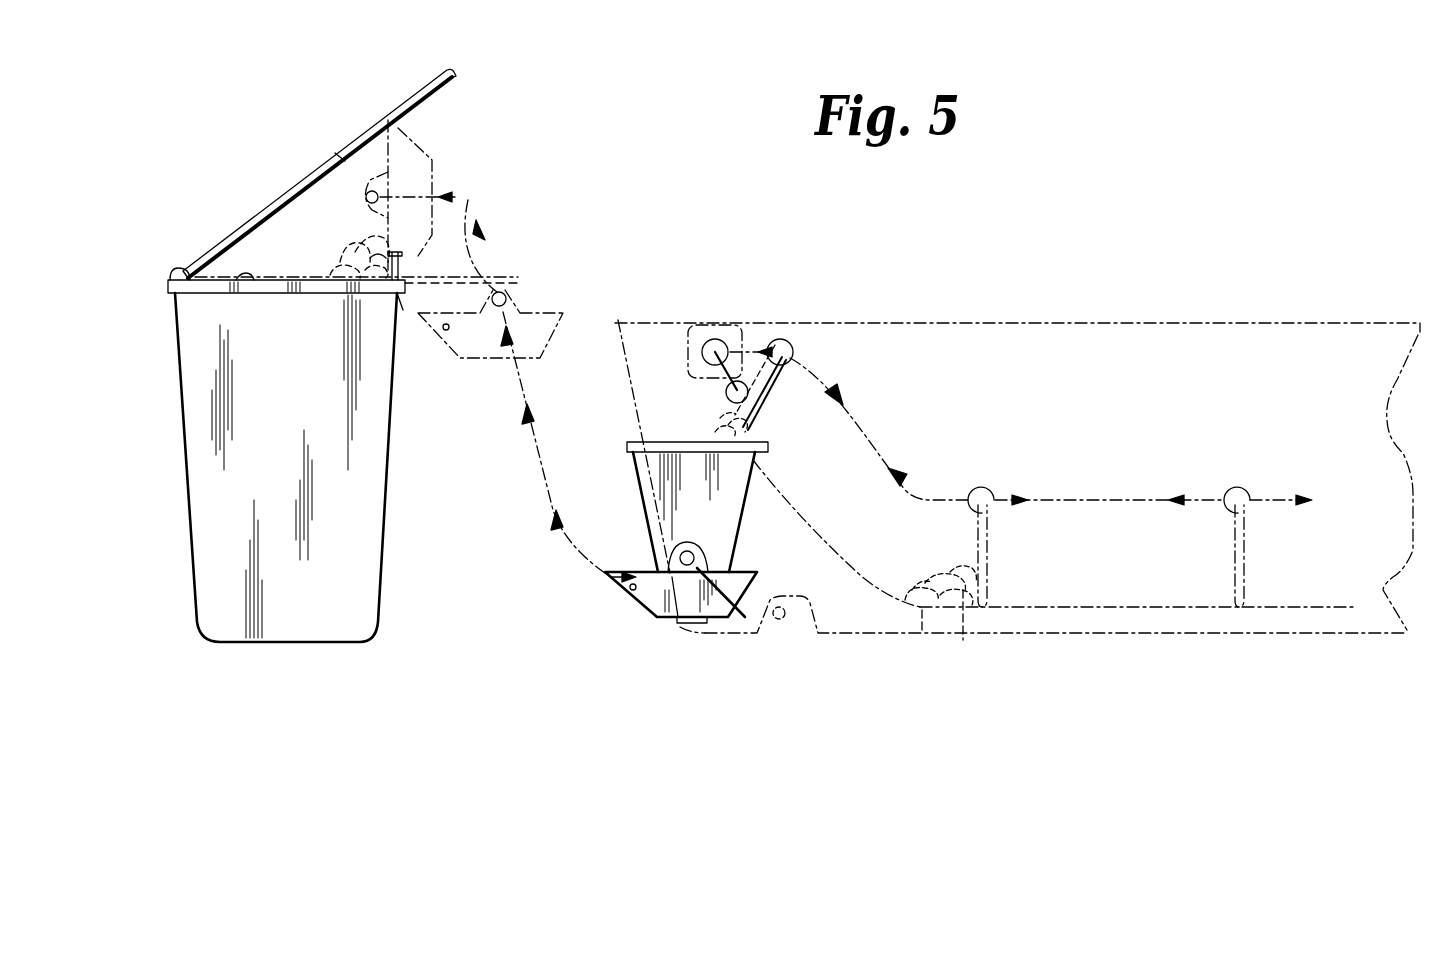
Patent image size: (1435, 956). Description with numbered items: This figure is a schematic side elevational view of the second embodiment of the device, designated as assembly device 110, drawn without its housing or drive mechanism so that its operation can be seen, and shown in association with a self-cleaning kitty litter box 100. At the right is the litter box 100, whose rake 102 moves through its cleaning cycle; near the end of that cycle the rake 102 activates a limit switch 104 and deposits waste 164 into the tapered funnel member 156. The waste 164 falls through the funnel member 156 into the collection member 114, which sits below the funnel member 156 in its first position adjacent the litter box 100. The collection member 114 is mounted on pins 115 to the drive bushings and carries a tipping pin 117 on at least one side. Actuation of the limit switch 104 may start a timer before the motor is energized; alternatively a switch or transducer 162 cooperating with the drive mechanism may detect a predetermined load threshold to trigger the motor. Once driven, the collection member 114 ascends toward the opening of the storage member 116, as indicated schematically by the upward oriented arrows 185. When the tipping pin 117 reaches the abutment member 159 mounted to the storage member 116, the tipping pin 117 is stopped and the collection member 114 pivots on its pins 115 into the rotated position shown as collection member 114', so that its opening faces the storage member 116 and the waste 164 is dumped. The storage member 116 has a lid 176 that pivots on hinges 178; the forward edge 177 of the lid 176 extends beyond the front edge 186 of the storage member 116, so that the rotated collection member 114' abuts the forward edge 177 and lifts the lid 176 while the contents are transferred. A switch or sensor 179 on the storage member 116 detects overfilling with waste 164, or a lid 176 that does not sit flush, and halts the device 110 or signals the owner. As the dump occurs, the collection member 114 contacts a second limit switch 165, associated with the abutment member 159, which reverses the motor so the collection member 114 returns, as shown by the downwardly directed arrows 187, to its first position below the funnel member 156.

The self-cleaning kitty litter box 100 is at (1208, 333).
The rake 102 is at (800, 345).
The limit switch 104 is at (742, 345).
The assembly device 110 is at (580, 220).
The collection member 114 is at (681, 648).
The collection member (rotated position) 114' is at (506, 236).
The pins 115 is at (730, 617).
The storage member 116 is at (357, 578).
The tipping pin 117 is at (637, 610).
The funnel member 156 is at (637, 472).
The abutment member 159 is at (373, 257).
The switch or transducer 162 is at (687, 627).
The waste 164 is at (337, 257).
The second limit switch 165 is at (397, 297).
The lid 176 is at (340, 157).
The forward edge 177 is at (455, 76).
The hinges 178 is at (187, 273).
The switch or sensor 179 is at (245, 280).
The upward oriented arrows 185 is at (502, 320).
The front edge 186 is at (403, 310).
The downwardly directed arrows 187 is at (520, 413).